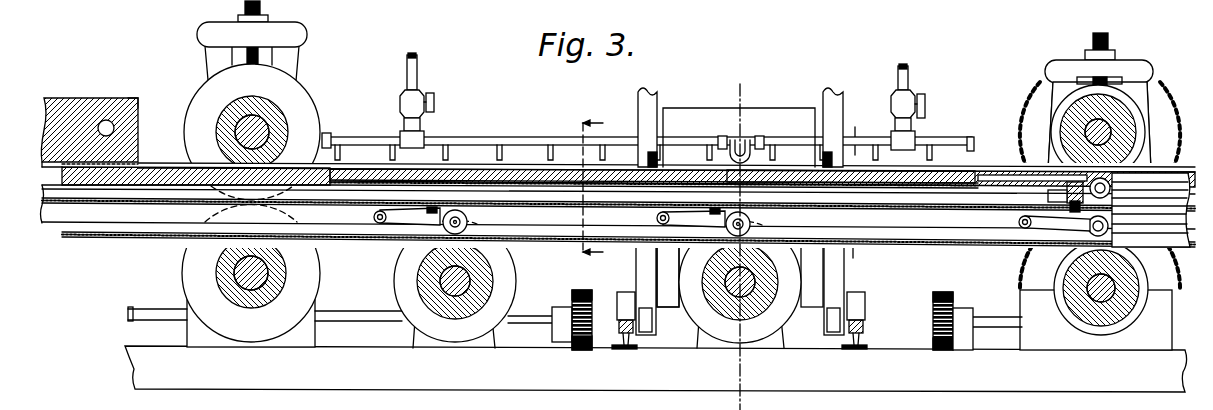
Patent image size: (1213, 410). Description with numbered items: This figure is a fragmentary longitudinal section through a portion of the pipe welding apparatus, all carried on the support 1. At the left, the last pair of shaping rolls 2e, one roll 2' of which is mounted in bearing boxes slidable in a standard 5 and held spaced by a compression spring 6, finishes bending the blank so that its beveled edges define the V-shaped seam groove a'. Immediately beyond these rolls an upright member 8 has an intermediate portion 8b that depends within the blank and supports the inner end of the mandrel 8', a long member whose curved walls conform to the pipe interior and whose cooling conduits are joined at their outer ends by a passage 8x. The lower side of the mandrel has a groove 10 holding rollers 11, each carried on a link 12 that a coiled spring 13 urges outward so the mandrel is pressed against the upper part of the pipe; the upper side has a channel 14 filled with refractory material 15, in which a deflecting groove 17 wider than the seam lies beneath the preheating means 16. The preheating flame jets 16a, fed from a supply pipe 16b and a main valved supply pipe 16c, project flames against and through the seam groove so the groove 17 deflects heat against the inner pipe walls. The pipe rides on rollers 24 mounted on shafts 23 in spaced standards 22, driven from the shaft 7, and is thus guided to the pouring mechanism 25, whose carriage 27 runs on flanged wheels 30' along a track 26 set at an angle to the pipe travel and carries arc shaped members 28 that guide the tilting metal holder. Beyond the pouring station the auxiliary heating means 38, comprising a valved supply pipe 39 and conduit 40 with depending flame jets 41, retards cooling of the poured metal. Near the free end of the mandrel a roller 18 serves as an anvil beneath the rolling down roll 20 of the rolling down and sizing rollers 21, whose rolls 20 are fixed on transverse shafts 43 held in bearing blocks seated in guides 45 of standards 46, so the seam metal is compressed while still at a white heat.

The support 1 is at (375, 384).
The roll 2' is at (240, 100).
The pair of rolls 2e is at (238, 70).
The standard 5 is at (590, 188).
The compression spring 6 is at (741, 240).
The drive shaft 7 is at (855, 189).
The upright member 8 is at (186, 149).
The intermediate portion 8b is at (128, 100).
The mandrel 8' is at (618, 219).
The passage 8x is at (1043, 197).
The groove 10 is at (895, 244).
The roller 11 is at (470, 221).
The link 12 is at (392, 242).
The coiled spring 13 is at (446, 207).
The groove 14 is at (345, 191).
The refractory material 15 is at (895, 184).
The preheating means 16 is at (647, 131).
The flame jets 16a is at (548, 155).
The supply pipe 16b is at (455, 140).
The main valved supply pipe 16c is at (418, 72).
The groove 17 is at (479, 169).
The roller 18 is at (1113, 208).
The rolling down and sizing roll 20 is at (1140, 128).
The rolling down and sizing rollers 21 is at (1172, 100).
The standard 22 is at (486, 344).
The shaft 23 is at (435, 300).
The roller 24 is at (506, 277).
The mechanism for supplying and pouring molten metal 25 is at (823, 88).
The track 26 is at (865, 330).
The carriage 27 is at (758, 289).
The arc shaped member 28 is at (656, 92).
The flanged wheel 30' is at (778, 275).
The auxiliary heating means 38 is at (960, 140).
The valved supply pipe 39 is at (912, 94).
The conduit 40 is at (931, 140).
The flame jets 41 is at (932, 158).
The transverse shaft 43 is at (1118, 148).
The guide 45 is at (1123, 80).
The standard 46 is at (1142, 92).
The seam groove a' is at (114, 152).